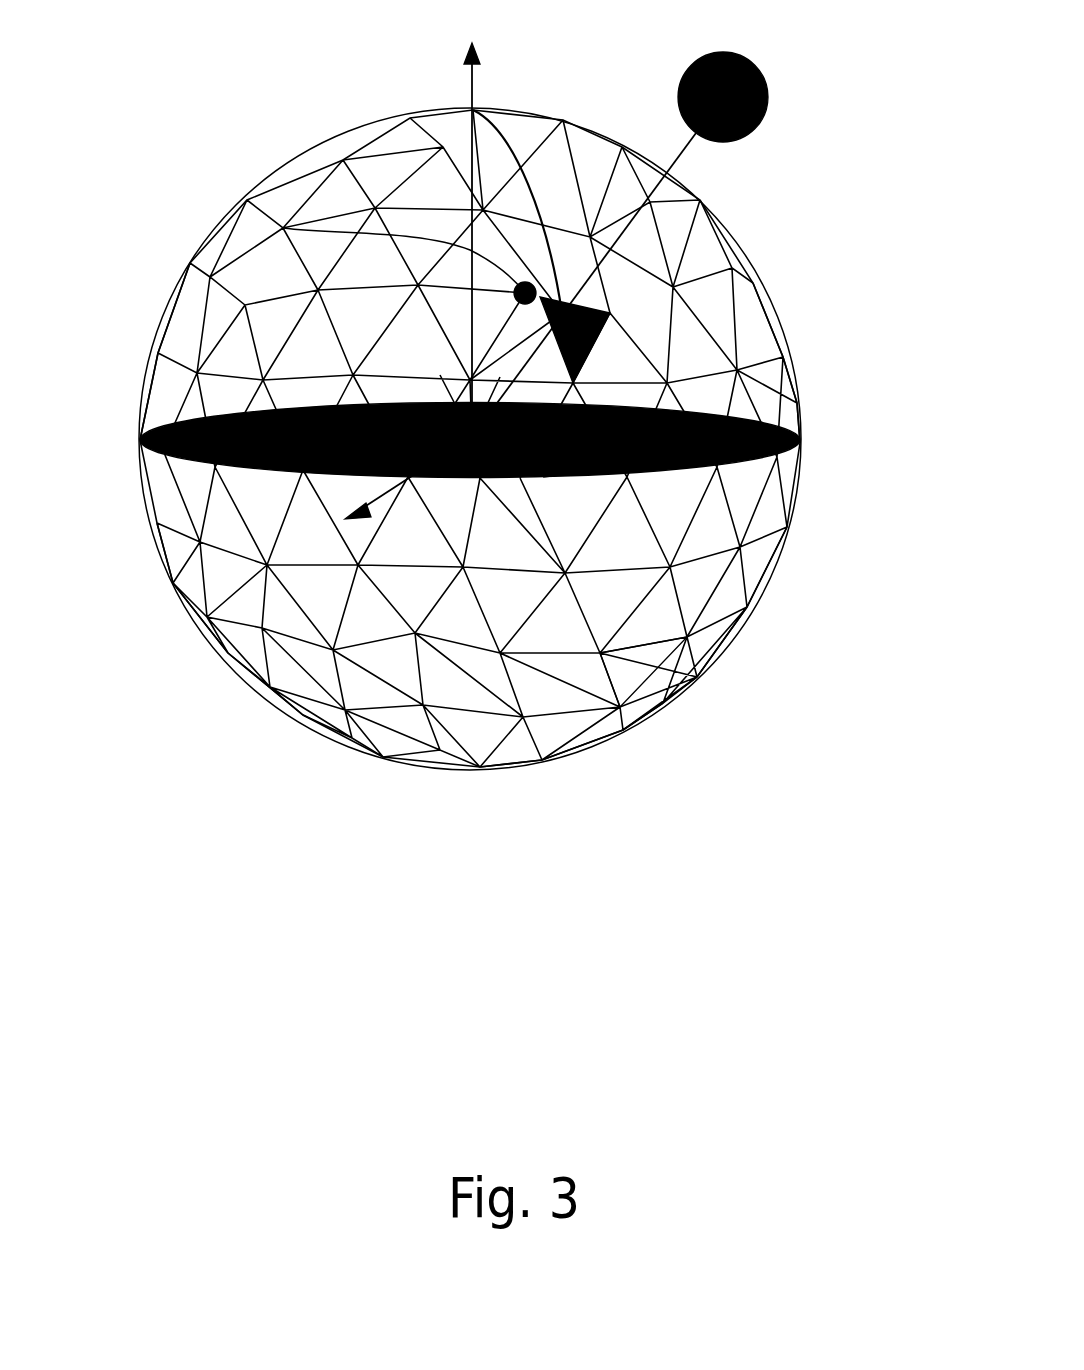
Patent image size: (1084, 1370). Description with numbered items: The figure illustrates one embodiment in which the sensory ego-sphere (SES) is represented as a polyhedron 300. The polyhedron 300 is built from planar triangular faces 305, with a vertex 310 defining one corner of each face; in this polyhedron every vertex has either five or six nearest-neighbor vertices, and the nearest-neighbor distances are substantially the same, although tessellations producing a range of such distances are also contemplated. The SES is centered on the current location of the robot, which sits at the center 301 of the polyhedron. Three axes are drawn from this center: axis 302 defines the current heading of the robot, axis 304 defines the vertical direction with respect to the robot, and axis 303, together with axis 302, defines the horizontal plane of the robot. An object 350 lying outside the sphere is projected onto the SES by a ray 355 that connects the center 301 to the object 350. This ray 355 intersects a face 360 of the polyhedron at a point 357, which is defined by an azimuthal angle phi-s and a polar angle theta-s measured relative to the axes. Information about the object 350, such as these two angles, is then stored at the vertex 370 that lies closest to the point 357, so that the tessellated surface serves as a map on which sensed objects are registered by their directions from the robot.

The polyhedron 300 is at (503, 790).
The center 301 is at (525, 293).
The axis 302 is at (372, 503).
The axis 303 is at (814, 452).
The axis 304 is at (470, 85).
The planar triangular face 305 is at (630, 672).
The vertex 310 is at (345, 158).
The object 350 is at (763, 70).
The ray 355 is at (676, 163).
The point 357 is at (563, 477).
The face 360 is at (615, 315).
The vertex 370 is at (483, 210).